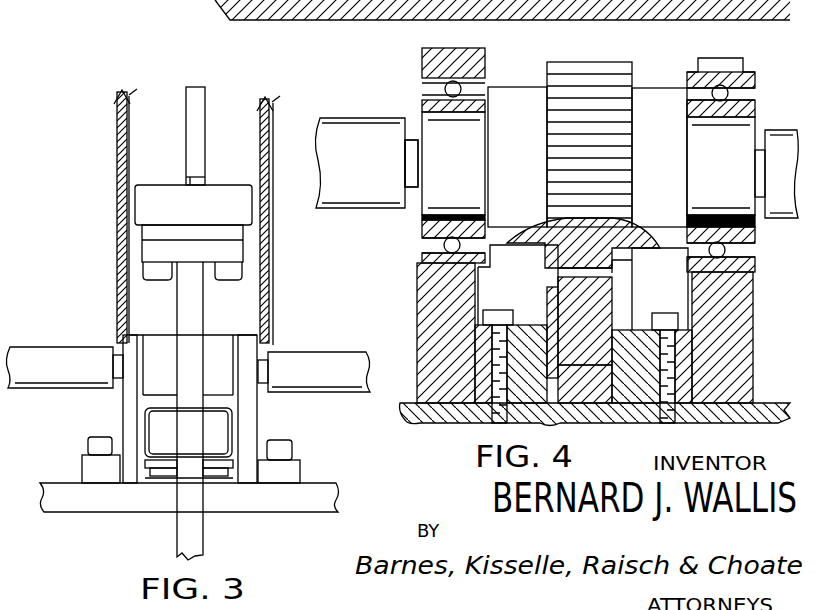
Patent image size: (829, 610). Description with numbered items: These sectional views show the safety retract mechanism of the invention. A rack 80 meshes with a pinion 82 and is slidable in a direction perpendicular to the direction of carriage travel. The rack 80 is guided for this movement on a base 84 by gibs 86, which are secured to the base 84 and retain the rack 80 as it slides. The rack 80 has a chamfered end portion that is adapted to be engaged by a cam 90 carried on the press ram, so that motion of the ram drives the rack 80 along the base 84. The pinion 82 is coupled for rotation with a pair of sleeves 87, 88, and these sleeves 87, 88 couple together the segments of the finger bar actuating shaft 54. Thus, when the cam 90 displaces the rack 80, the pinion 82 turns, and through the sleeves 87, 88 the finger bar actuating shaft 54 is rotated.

In FIG. 4, the finger bar actuating shaft 54 is at (412, 192).
In FIG. 4, the rack 80 is at (596, 300).
In FIG. 4, the pinion 82 is at (608, 86).
In FIG. 4, the base 84 is at (598, 425).
In FIG. 4, the gibs 86 is at (547, 310).
In FIG. 3, the sleeve 87 is at (33, 373).
In FIG. 4, the sleeve 87 is at (373, 135).
In FIG. 3, the sleeve 88 is at (330, 362).
In FIG. 4, the sleeve 88 is at (776, 145).
In FIG. 3, the cam 90 is at (188, 308).